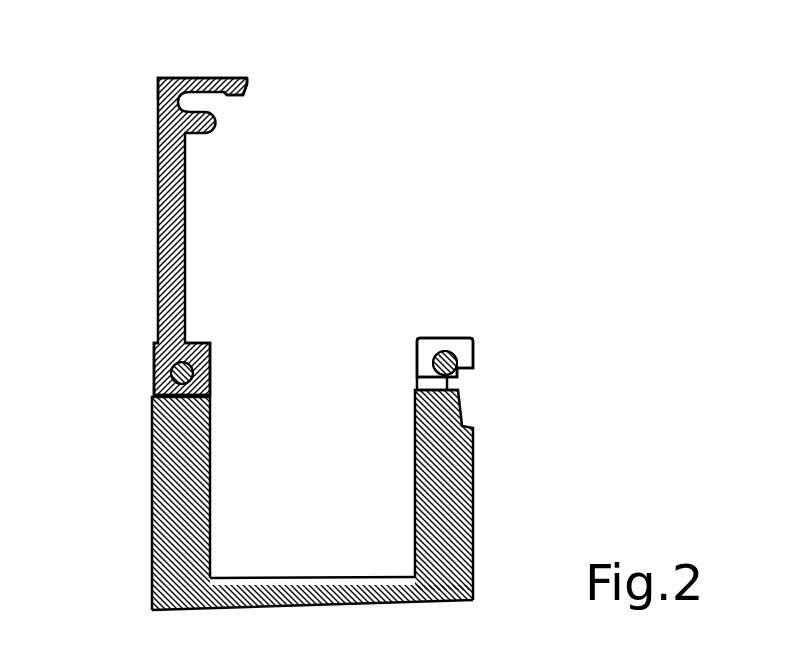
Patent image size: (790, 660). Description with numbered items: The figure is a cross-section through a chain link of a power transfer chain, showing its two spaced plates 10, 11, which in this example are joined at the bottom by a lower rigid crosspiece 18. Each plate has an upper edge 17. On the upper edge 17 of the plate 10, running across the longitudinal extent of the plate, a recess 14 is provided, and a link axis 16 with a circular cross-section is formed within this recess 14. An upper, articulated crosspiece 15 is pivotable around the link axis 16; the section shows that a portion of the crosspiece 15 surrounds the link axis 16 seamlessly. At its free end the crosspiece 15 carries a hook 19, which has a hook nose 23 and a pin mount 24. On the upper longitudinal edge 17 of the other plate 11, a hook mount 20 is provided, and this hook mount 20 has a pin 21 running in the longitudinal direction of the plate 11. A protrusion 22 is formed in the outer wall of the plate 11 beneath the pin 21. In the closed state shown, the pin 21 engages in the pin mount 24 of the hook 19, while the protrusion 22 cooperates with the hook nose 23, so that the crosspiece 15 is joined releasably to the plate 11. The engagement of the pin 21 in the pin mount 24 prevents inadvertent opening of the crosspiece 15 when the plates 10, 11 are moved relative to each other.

The plate 10 is at (162, 476).
The plate 11 is at (473, 482).
The recess 14 is at (203, 393).
The crosspiece 15 is at (168, 220).
The link axis 16 is at (207, 372).
The upper edge 17 is at (208, 342).
The lower rigid crosspiece 18 is at (302, 578).
The hook 19 is at (158, 80).
The hook mount 20 is at (467, 347).
The pin 21 is at (437, 350).
The protrusion 22 is at (455, 393).
The hook nose 23 is at (231, 98).
The pin mount 24 is at (188, 80).